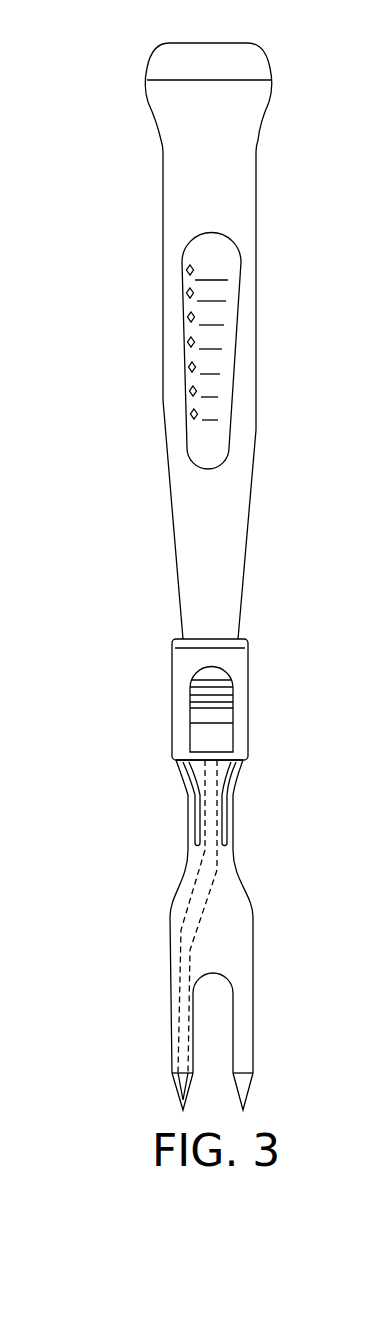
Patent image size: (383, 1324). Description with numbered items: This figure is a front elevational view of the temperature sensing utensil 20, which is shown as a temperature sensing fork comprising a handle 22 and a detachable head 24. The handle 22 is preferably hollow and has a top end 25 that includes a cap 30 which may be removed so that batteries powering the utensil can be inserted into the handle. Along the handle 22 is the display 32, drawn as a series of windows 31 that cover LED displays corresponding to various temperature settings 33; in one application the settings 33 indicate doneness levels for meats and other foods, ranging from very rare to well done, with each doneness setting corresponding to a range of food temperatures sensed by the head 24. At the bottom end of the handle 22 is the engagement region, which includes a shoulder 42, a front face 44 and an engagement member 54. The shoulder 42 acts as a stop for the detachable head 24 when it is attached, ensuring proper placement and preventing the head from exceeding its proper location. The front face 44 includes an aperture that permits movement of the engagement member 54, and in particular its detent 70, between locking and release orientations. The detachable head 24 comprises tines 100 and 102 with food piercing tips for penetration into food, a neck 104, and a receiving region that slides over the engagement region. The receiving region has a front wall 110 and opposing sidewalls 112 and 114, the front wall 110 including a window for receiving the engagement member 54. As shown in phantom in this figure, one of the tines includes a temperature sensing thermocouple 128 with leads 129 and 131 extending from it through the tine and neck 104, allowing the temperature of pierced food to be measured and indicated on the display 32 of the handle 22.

The temperature sensing utensil 20 is at (86, 94).
The handle 22 is at (164, 373).
The detachable head 24 is at (169, 920).
The top end 25 is at (266, 124).
The cap 30 is at (266, 58).
The windows 31 is at (182, 274).
The display 32 is at (225, 257).
The temperature settings 33 is at (226, 278).
The shoulder 42 is at (248, 640).
The front face 44 is at (222, 742).
The engagement member 54 is at (185, 709).
The detent 70 is at (223, 680).
The tine 100 is at (173, 1042).
The tine 102 is at (245, 1062).
The neck 104 is at (187, 812).
The front wall 110 is at (186, 658).
The sidewall 112 is at (172, 745).
The sidewall 114 is at (250, 730).
The temperature sensing thermocouple 128 is at (183, 1098).
The lead 129 is at (175, 960).
The lead 131 is at (210, 917).